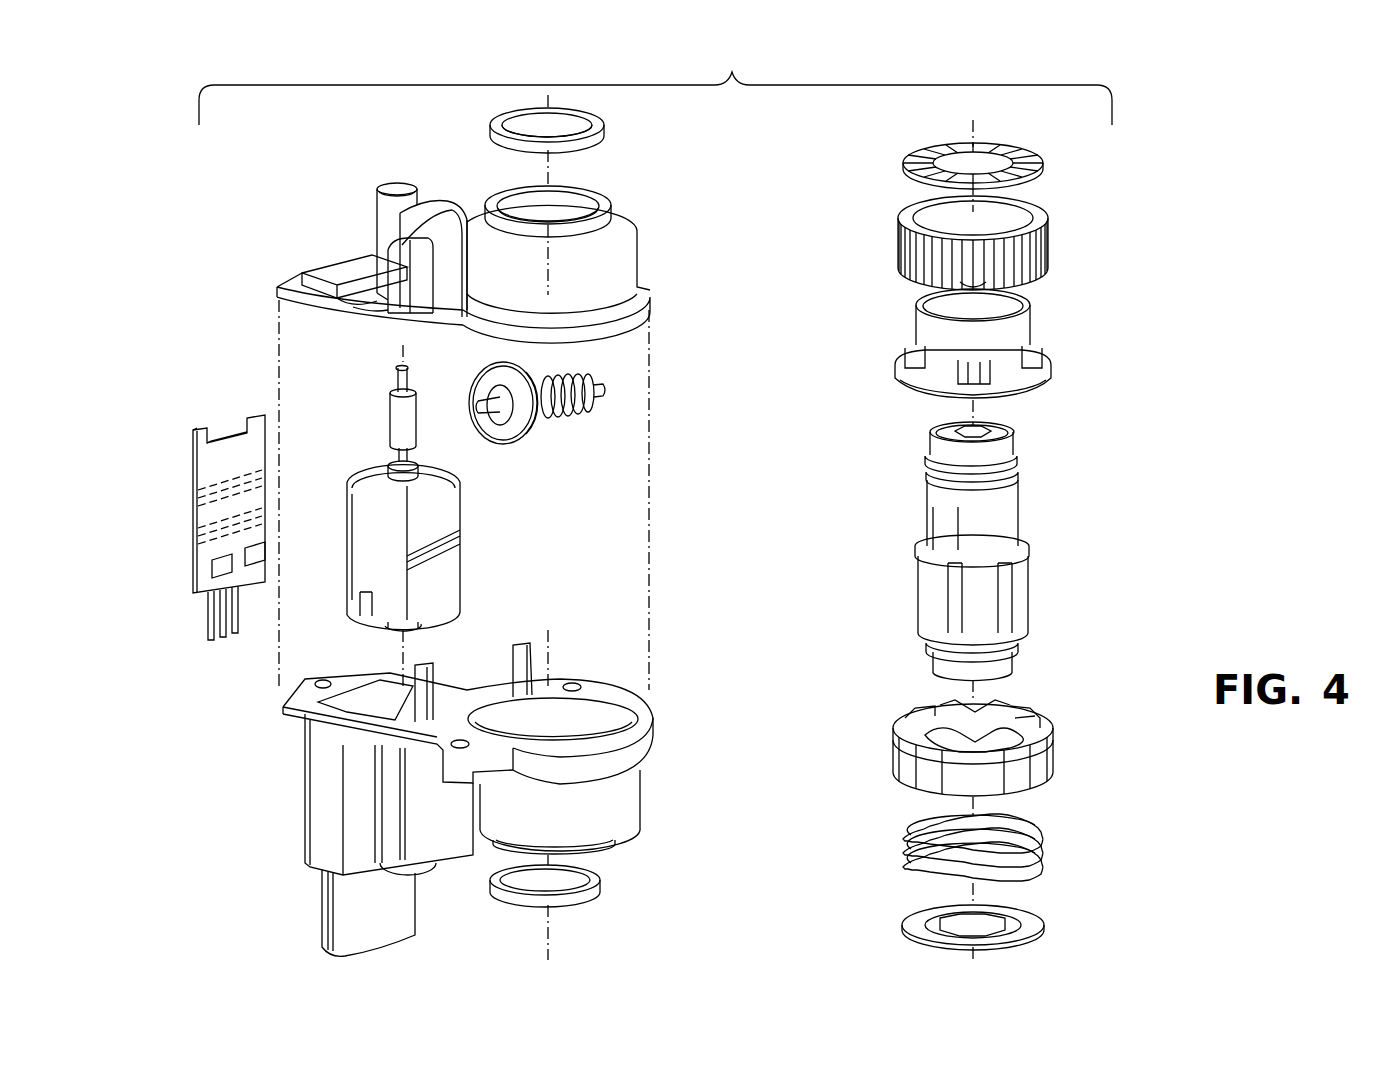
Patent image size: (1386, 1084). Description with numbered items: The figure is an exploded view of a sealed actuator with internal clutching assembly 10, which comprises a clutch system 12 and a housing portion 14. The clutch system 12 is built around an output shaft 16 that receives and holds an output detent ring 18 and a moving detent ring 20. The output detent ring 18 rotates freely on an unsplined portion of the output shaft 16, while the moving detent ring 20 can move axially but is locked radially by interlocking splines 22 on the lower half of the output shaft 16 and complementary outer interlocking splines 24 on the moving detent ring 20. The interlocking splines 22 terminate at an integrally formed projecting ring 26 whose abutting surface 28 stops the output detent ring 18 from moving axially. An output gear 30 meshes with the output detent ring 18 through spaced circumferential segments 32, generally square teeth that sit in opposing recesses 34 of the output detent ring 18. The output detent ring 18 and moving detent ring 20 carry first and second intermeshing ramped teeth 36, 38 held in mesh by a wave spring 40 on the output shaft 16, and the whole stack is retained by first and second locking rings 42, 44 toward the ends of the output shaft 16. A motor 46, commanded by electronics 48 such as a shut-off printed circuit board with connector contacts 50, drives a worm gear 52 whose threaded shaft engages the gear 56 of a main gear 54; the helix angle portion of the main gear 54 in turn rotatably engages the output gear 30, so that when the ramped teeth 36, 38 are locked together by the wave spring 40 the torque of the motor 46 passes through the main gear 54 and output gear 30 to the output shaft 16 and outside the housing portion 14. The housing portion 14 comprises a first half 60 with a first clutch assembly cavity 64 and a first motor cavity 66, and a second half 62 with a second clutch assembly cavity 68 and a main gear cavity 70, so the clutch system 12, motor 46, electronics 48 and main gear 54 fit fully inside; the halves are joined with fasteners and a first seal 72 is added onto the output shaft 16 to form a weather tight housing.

The sealed actuator with internal clutching assembly 10 is at (655, 82).
The clutch system 12 is at (858, 212).
The housing portion 14 is at (630, 185).
The output shaft 16 is at (1010, 508).
The output detent ring 18 is at (1005, 333).
The moving detent ring 20 is at (967, 744).
The interlocking splines 22 is at (1010, 612).
The outer interlocking splines 24 is at (905, 770).
The projecting ring 26 is at (1030, 550).
The abutting surface 28 is at (1030, 530).
The output gear 30 is at (1045, 235).
The spaced circumferential segments 32 is at (1020, 290).
The opposing recesses 34 is at (1030, 356).
The first intermeshing ramped teeth 36 is at (910, 395).
The second intermeshing ramped teeth 38 is at (940, 705).
The wave spring 40 is at (1035, 835).
The first locking ring 42 is at (1033, 922).
The second locking ring 44 is at (1035, 155).
The motor 46 is at (447, 583).
The electronics 48 is at (205, 515).
The connector contacts 50 is at (210, 625).
The worm gear 52 is at (382, 441).
The main gear 54 is at (553, 432).
The gear 56 is at (518, 440).
The first half 60 is at (489, 230).
The second half 62 is at (495, 785).
The first clutch assembly cavity 64 is at (620, 715).
The first motor cavity 66 is at (375, 692).
The second clutch assembly cavity 68 is at (510, 192).
The main gear cavity 70 is at (588, 140).
The first seal 72 is at (600, 886).